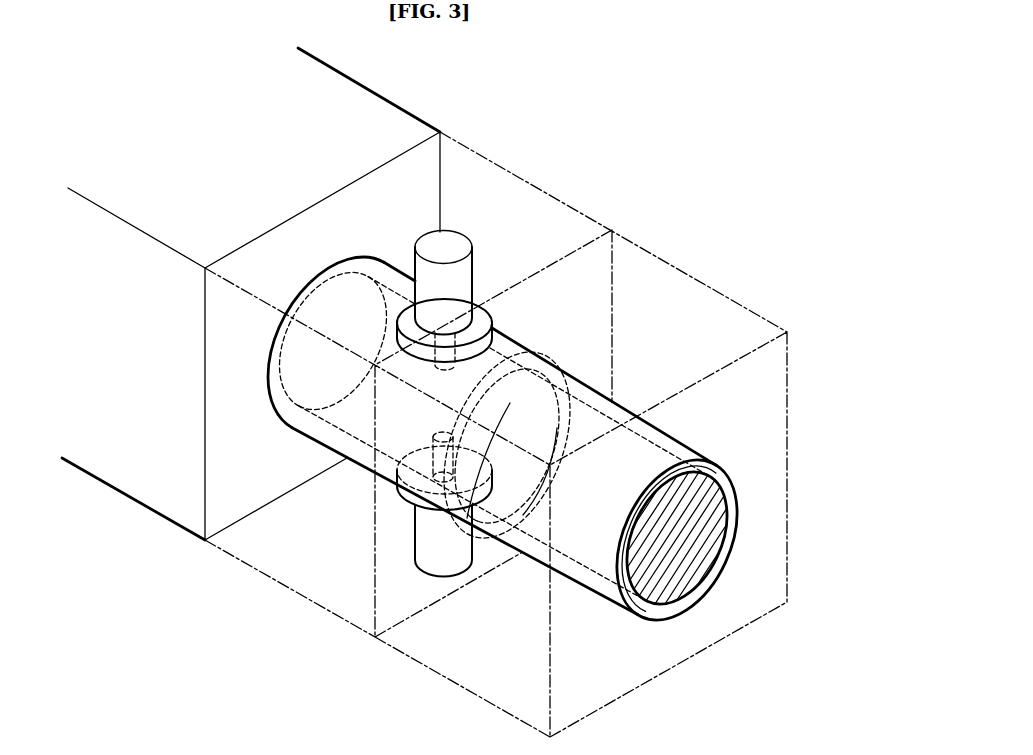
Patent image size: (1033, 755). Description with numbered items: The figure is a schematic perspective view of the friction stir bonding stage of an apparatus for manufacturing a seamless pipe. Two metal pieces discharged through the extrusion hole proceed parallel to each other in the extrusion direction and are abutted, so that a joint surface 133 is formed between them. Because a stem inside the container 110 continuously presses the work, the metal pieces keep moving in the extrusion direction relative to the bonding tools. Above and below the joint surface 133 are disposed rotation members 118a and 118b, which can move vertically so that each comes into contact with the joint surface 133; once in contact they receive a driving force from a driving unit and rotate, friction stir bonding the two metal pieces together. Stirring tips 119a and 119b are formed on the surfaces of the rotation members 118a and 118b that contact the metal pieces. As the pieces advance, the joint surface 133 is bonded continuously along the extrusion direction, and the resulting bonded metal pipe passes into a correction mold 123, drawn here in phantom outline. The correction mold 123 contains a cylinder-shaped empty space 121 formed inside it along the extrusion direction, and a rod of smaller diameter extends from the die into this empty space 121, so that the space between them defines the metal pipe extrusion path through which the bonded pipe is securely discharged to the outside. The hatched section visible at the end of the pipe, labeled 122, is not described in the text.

The container 110 is at (360, 102).
The joint surface 133 is at (368, 288).
The rotation member 118a is at (457, 247).
The rotation member 118b is at (435, 565).
The stirring tip 119a is at (452, 357).
The stirring tip 119b is at (405, 480).
The empty space 121 is at (647, 612).
The inner core member 122 is at (683, 568).
The correction mold 123 is at (683, 272).